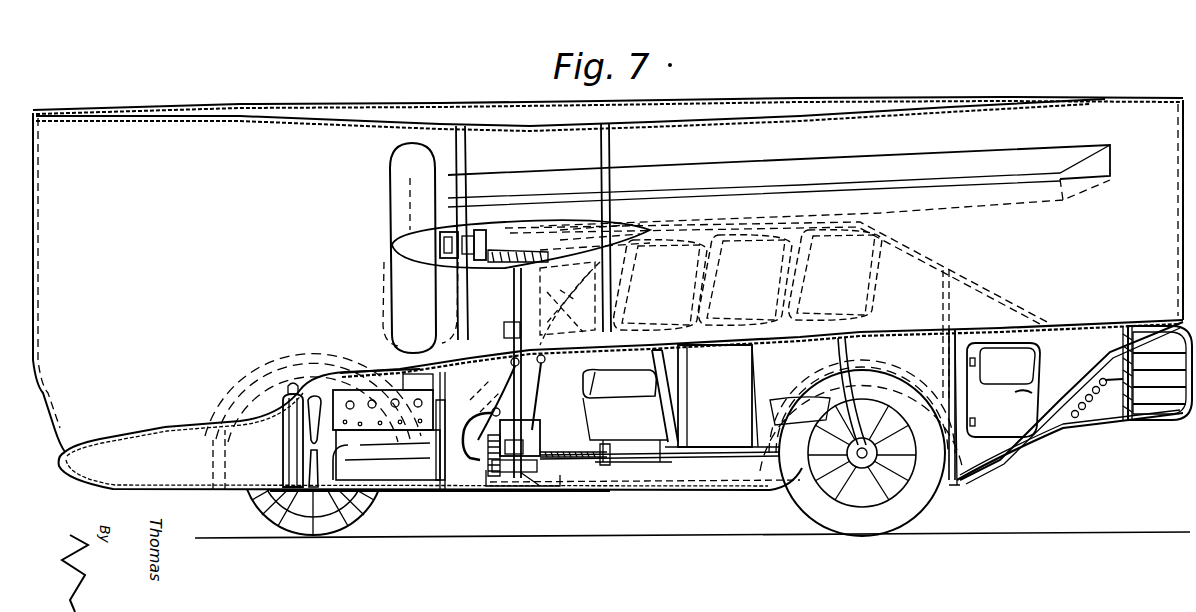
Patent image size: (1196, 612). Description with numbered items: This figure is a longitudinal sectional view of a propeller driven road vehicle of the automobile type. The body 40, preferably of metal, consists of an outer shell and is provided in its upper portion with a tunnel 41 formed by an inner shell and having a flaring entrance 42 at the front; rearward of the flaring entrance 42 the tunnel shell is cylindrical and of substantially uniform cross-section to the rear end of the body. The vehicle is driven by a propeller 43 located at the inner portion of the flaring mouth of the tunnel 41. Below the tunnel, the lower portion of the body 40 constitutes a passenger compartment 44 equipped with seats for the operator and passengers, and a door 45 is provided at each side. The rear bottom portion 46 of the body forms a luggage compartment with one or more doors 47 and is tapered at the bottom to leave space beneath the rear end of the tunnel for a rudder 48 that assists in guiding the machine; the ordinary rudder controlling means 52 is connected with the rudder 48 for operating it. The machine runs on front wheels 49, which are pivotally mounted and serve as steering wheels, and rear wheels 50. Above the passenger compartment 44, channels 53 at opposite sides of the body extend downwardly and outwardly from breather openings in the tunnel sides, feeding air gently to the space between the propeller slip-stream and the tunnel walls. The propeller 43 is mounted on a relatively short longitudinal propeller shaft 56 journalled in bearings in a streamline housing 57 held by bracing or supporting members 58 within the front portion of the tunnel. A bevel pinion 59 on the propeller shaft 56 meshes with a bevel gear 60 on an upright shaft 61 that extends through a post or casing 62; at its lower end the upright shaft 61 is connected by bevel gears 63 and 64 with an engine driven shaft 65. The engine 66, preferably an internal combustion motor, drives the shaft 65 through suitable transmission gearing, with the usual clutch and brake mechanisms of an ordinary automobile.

The body 40 is at (760, 98).
The tunnel 41 is at (701, 124).
The flaring entrance 42 is at (293, 132).
The propeller 43 is at (393, 204).
The passenger compartment 44 is at (614, 406).
The door 45 is at (747, 396).
The rear bottom portion 46 is at (1066, 403).
The door 47 is at (1003, 390).
The rudder 48 is at (1170, 421).
The front wheel 49 is at (332, 522).
The rear wheel 50 is at (832, 514).
The rudder controlling means 52 is at (1093, 410).
The channel 53 is at (798, 159).
The propeller shaft 56 is at (520, 238).
The streamline housing 57 is at (578, 228).
The bracing or supporting members 58 is at (466, 163).
The bevel pinion 59 is at (462, 232).
The bevel gear 60 is at (545, 258).
The upright shaft 61 is at (470, 349).
The post or casing 62 is at (505, 386).
The bevel gear 63 is at (533, 447).
The bevel gear 64 is at (500, 474).
The engine driven shaft 65 is at (490, 468).
The engine 66 is at (340, 398).